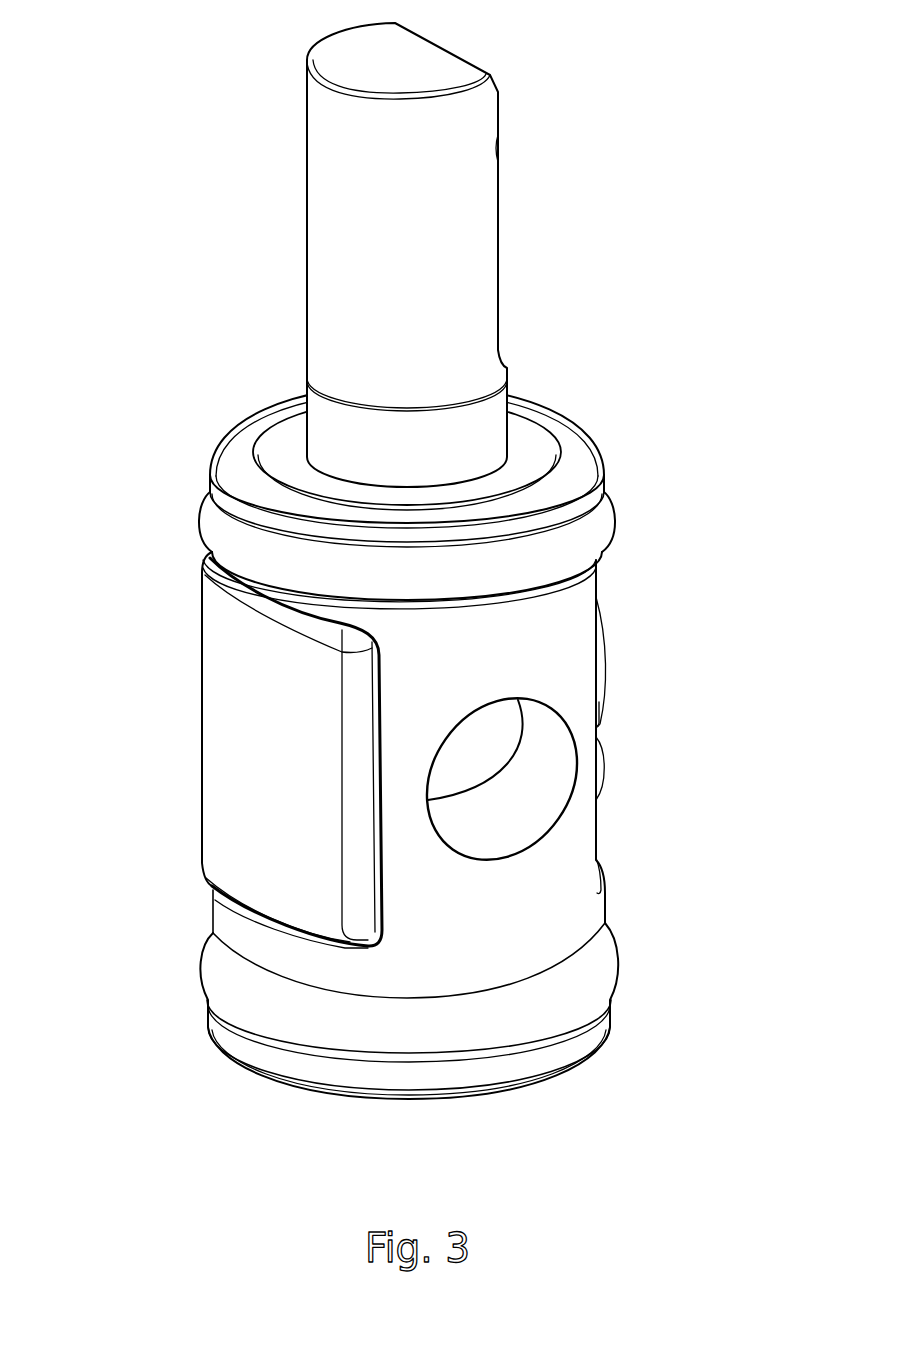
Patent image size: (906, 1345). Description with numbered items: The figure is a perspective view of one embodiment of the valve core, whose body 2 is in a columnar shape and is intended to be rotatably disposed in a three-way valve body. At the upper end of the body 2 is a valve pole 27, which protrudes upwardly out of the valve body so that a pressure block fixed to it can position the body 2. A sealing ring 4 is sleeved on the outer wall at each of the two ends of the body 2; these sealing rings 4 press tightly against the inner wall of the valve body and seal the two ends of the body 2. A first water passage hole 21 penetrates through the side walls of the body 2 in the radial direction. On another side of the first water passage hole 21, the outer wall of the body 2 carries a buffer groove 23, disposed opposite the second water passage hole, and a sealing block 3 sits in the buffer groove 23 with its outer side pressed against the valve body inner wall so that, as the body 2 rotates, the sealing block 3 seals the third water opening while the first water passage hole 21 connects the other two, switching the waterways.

The body 2 is at (506, 648).
The sealing block 3 is at (247, 755).
The sealing ring 4 is at (572, 542).
The first water passage hole 21 is at (522, 788).
The buffer groove 23 is at (263, 926).
The valve pole 27 is at (363, 298).